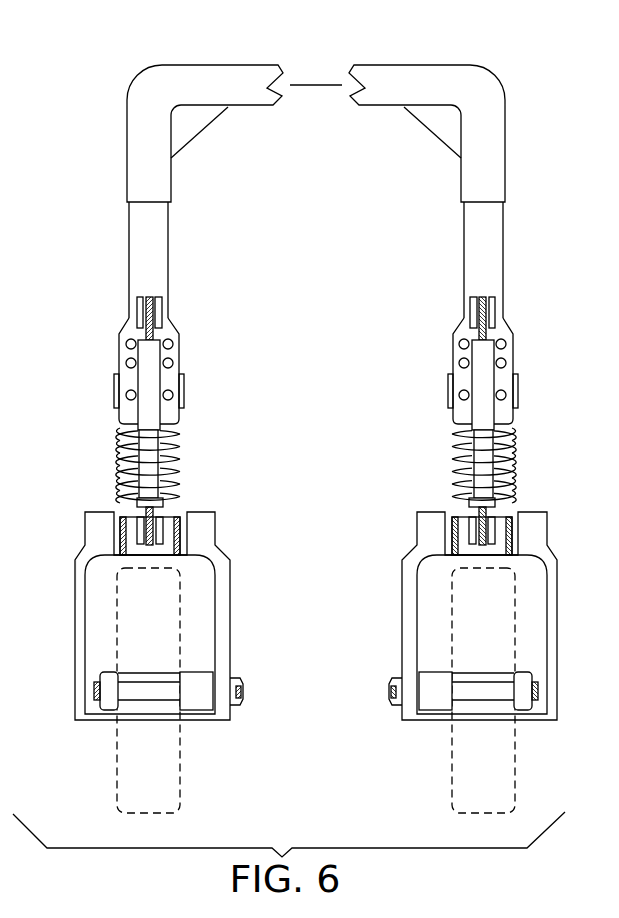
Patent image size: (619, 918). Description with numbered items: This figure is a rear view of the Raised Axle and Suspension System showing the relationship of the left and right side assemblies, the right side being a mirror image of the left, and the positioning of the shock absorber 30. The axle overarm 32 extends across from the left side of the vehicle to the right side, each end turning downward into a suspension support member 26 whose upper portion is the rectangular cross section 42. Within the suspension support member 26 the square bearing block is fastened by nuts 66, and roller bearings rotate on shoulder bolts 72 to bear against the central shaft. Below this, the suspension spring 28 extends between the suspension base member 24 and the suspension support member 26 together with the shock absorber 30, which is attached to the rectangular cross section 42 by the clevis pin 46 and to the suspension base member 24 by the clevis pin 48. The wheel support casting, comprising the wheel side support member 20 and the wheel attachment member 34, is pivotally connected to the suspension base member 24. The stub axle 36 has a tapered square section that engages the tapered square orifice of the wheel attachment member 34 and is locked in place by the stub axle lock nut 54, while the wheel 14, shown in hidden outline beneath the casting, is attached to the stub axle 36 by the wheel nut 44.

The wheel 14 is at (135, 793).
The wheel side support member 20 is at (83, 562).
The suspension base member 24 is at (167, 550).
The suspension support member 26 is at (128, 272).
The suspension spring 28 is at (122, 463).
The shock absorber 30 is at (150, 457).
The axle overarm 32 is at (222, 87).
The wheel attachment member 34 is at (220, 635).
The stub axle 36 is at (190, 697).
The rectangular cross section 42 is at (155, 260).
The wheel nut 44 is at (112, 705).
The clevis pin 46 is at (168, 310).
The clevis pin 48 is at (160, 532).
The stub axle lock nut 54 is at (237, 693).
The nuts 66 is at (126, 363).
The shoulder bolts 72 is at (118, 410).